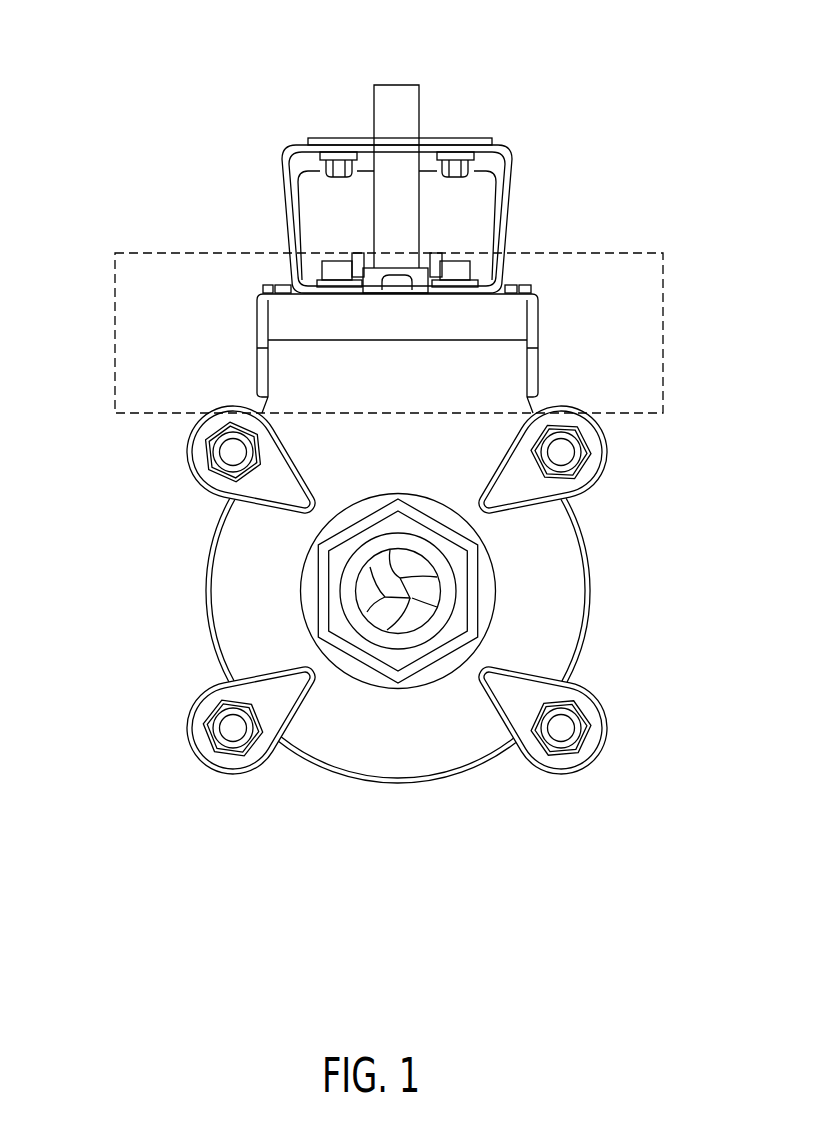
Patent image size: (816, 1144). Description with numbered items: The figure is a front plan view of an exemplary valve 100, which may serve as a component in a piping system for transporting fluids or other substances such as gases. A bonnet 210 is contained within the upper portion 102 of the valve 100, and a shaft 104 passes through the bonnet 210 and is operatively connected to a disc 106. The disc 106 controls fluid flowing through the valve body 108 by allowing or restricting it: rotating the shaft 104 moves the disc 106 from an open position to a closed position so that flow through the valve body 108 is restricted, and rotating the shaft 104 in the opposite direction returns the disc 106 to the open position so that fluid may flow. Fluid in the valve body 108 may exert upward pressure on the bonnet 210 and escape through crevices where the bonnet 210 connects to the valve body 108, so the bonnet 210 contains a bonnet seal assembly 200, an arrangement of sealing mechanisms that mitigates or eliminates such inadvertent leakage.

The valve 100 is at (100, 88).
The upper portion 102 is at (668, 262).
The shaft 104 is at (398, 169).
The disc 106 is at (412, 598).
The valve body 108 is at (223, 555).
The bonnet seal assembly 200 is at (243, 312).
The bonnet 210 is at (498, 318).